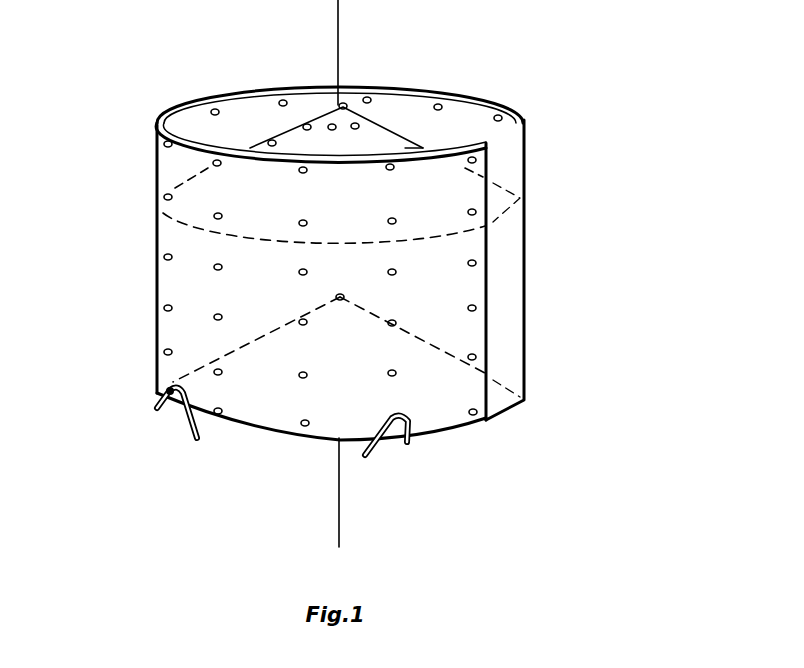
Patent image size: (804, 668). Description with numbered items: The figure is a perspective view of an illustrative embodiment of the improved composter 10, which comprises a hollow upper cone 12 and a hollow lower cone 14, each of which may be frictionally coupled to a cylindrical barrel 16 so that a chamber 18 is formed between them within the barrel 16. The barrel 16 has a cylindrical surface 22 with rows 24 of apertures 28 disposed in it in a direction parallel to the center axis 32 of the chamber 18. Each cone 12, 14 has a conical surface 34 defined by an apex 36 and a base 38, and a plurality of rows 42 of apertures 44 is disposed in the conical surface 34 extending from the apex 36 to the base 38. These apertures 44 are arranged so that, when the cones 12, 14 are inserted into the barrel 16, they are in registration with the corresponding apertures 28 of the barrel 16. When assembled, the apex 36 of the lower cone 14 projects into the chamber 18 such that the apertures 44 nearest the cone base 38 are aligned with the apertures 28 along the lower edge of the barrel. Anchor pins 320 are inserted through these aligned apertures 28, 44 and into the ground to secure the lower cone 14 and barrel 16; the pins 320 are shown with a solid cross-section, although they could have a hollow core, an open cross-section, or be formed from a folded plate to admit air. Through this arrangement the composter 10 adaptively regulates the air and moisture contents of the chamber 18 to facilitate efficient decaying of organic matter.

The composter 10 is at (142, 165).
The upper cone 12 is at (383, 142).
The lower cone 14 is at (440, 416).
The barrel 16 is at (155, 276).
The chamber 18 is at (524, 302).
The cylindrical surface 22 is at (528, 162).
The rows 24 is at (306, 173).
The apertures 28 is at (220, 270).
The center axis 32 is at (339, 514).
The conical surface 34 is at (458, 162).
The apex 36 is at (346, 106).
The base 38 is at (432, 240).
The rows 42 is at (330, 122).
The apertures 44 is at (219, 213).
The anchor pins 320 is at (376, 452).